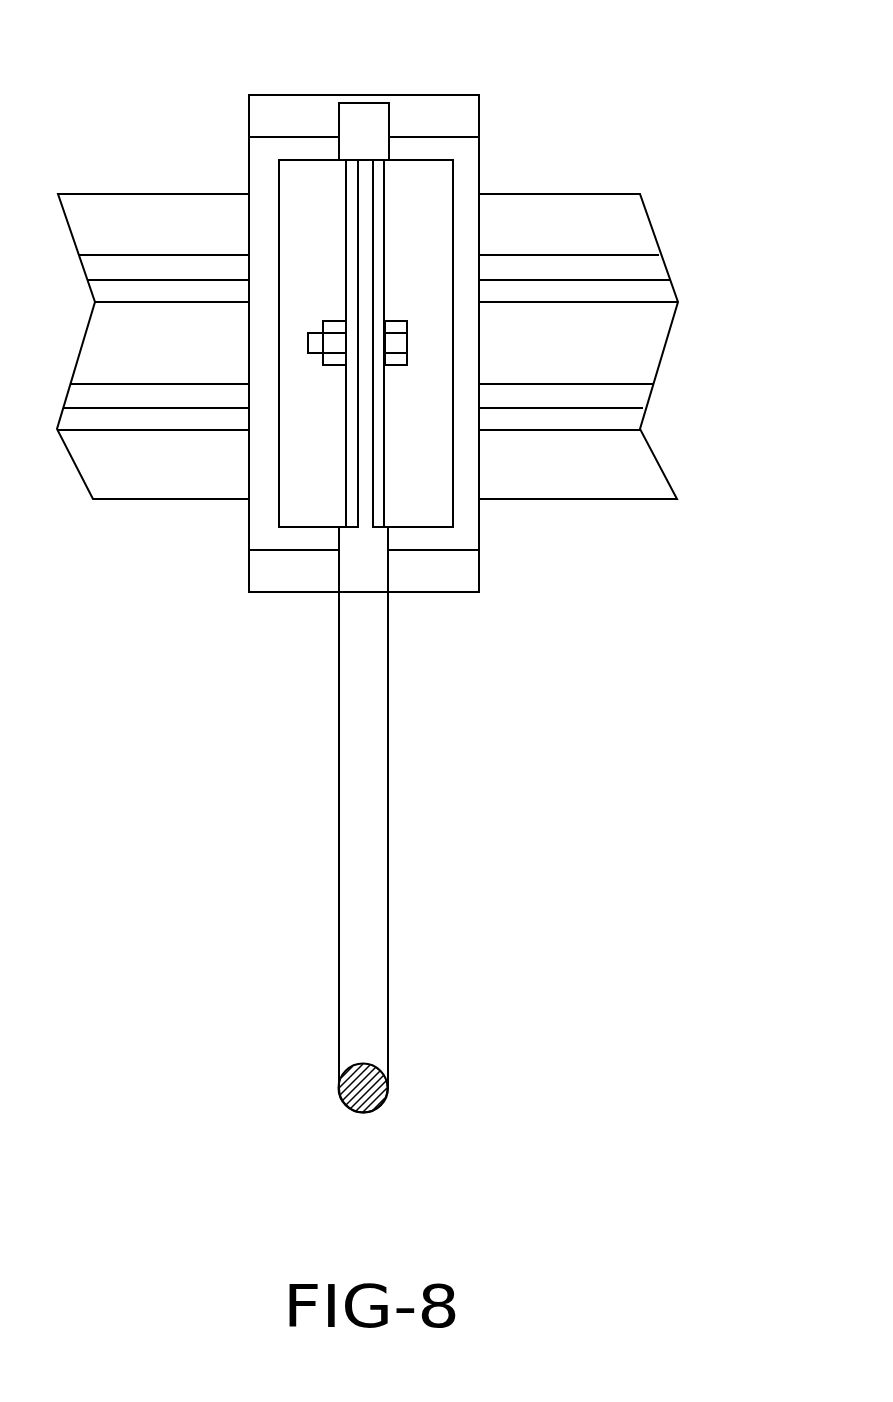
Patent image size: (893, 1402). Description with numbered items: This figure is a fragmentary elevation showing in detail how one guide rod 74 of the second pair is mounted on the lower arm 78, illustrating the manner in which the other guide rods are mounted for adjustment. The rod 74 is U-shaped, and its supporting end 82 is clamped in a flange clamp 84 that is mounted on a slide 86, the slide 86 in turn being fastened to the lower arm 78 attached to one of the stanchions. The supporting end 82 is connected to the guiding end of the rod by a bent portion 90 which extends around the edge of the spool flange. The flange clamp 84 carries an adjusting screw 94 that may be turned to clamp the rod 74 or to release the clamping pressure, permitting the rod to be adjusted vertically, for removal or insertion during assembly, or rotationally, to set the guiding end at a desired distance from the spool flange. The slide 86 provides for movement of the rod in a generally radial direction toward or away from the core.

The guide rod 74 is at (358, 122).
The lower arm 78 is at (637, 230).
The supporting end 82 is at (372, 800).
The flange clamp 84 is at (304, 197).
The slide 86 is at (663, 295).
The bent portion 90 is at (368, 1093).
The adjusting screw 94 is at (396, 343).